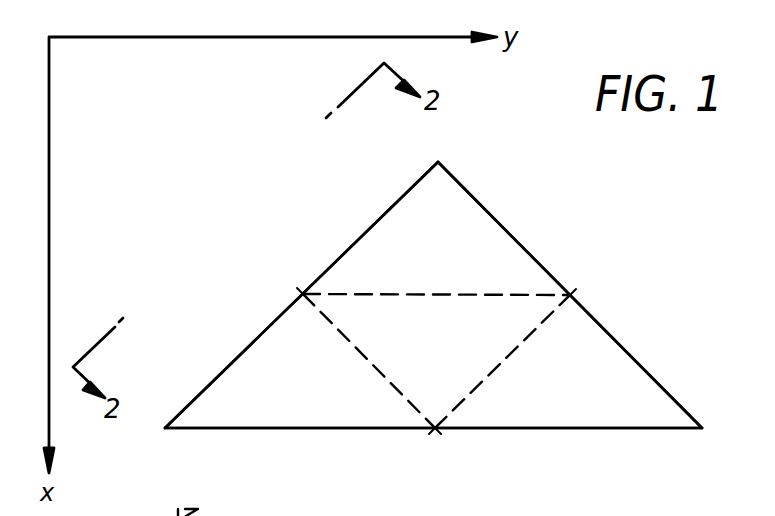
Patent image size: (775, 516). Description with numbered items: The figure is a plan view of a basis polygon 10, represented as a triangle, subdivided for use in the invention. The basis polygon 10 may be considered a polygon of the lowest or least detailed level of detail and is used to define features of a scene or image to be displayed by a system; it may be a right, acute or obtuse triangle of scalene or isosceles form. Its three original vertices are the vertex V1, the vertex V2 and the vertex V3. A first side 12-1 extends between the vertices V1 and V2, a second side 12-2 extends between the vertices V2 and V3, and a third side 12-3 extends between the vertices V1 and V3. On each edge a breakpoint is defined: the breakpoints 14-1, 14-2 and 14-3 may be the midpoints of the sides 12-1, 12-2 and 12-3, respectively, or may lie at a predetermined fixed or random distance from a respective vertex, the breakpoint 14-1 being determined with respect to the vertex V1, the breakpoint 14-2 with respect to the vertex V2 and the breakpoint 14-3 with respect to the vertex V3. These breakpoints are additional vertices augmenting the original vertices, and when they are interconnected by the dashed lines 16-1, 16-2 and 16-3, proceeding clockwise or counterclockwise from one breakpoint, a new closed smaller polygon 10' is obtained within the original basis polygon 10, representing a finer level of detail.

The basis polygon 10 is at (433, 295).
The smaller polygon 10' is at (436, 361).
The first side 12-1 is at (255, 340).
The second side 12-2 is at (540, 258).
The third side 12-3 is at (532, 428).
The breakpoint 14-1 is at (303, 293).
The breakpoint 14-2 is at (570, 295).
The breakpoint 14-3 is at (435, 428).
The dashed line 16-1 is at (455, 294).
The dashed line 16-2 is at (540, 325).
The dashed line 16-3 is at (365, 357).
The vertex V1 is at (165, 428).
The vertex V2 is at (438, 162).
The vertex V3 is at (702, 428).